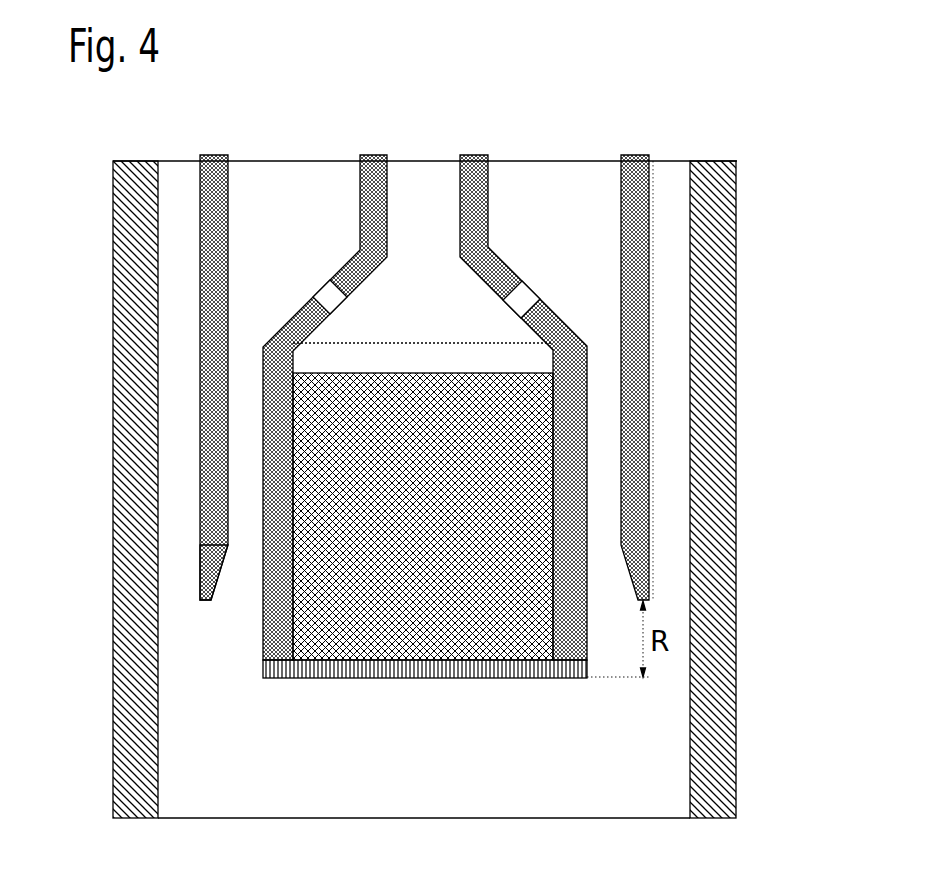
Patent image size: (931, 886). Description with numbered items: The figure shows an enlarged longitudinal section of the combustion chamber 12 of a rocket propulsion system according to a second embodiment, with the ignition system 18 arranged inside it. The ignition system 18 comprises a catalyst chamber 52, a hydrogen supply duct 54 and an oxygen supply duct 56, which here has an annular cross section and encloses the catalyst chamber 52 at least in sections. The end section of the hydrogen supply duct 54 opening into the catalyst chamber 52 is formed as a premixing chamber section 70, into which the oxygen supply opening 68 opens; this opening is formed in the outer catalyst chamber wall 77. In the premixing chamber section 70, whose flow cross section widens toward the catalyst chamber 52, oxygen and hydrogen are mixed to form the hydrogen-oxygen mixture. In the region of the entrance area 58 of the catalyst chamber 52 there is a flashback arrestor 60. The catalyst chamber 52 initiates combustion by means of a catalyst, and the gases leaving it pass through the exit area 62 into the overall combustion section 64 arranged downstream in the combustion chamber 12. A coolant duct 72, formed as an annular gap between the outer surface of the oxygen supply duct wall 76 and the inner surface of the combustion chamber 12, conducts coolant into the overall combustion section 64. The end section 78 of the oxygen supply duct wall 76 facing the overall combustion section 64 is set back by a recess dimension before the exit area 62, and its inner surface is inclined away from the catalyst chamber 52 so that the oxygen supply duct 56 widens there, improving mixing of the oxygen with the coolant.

The combustion chamber 12 is at (742, 281).
The ignition system 18 is at (661, 122).
The catalyst chamber 52 is at (493, 637).
The hydrogen supply duct 54 is at (424, 160).
The oxygen supply duct 56 is at (288, 160).
The entrance area 58 is at (346, 337).
The flashback arrestor 60 is at (367, 356).
The exit area 62 is at (377, 692).
The overall combustion section 64 is at (630, 797).
The oxygen supply opening 68 is at (494, 306).
The premixing chamber section 70 is at (389, 284).
The coolant duct 72 is at (177, 160).
The oxygen supply duct wall 76 is at (212, 155).
The outer catalyst chamber wall 77 is at (476, 155).
The end section 78 is at (207, 616).